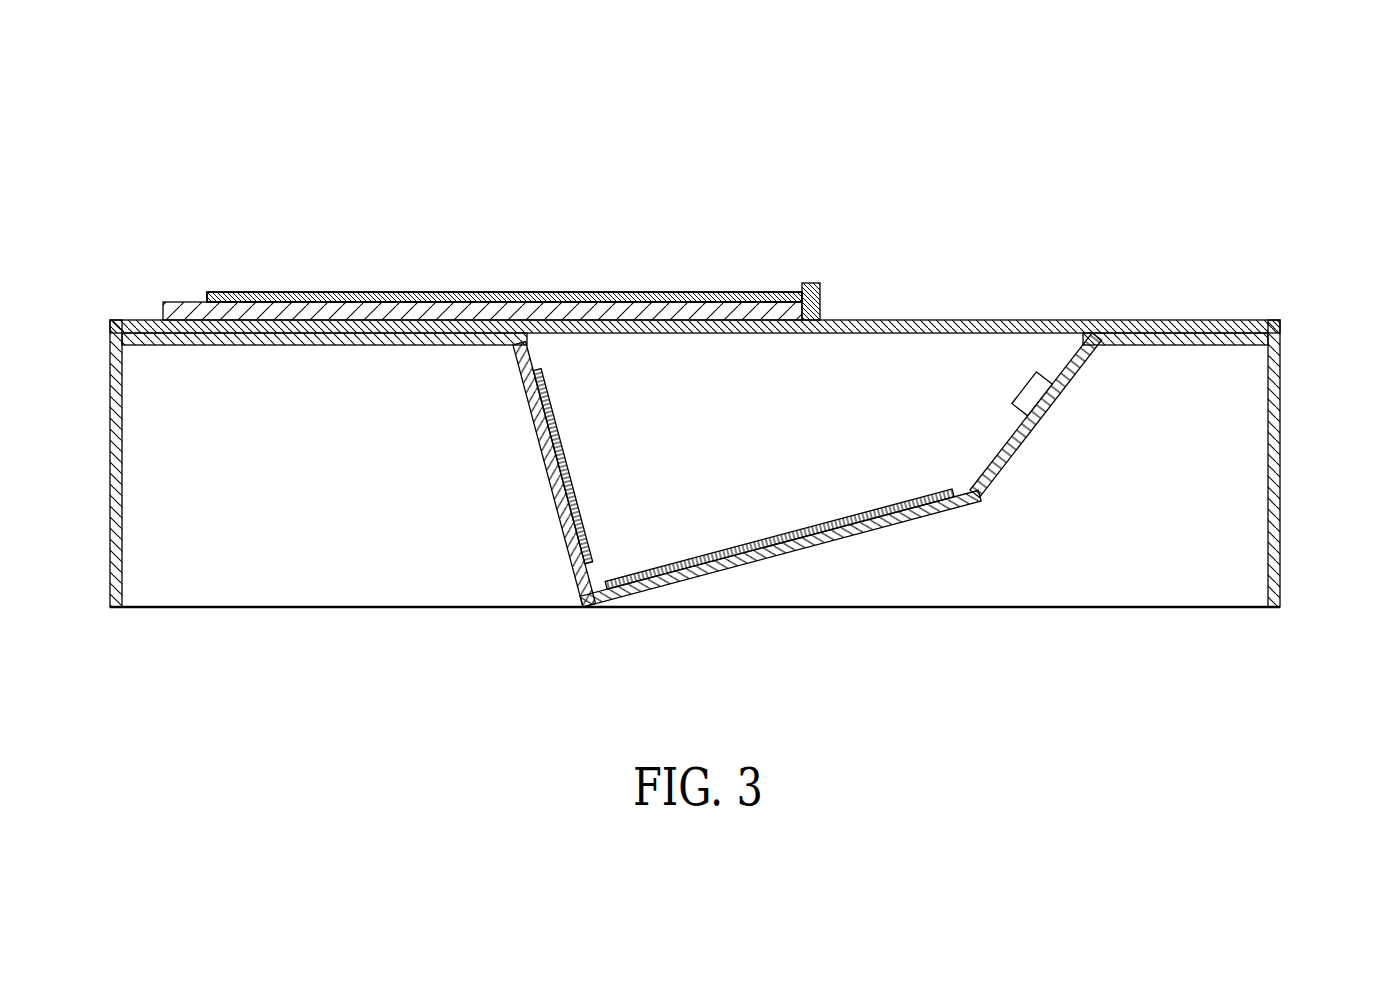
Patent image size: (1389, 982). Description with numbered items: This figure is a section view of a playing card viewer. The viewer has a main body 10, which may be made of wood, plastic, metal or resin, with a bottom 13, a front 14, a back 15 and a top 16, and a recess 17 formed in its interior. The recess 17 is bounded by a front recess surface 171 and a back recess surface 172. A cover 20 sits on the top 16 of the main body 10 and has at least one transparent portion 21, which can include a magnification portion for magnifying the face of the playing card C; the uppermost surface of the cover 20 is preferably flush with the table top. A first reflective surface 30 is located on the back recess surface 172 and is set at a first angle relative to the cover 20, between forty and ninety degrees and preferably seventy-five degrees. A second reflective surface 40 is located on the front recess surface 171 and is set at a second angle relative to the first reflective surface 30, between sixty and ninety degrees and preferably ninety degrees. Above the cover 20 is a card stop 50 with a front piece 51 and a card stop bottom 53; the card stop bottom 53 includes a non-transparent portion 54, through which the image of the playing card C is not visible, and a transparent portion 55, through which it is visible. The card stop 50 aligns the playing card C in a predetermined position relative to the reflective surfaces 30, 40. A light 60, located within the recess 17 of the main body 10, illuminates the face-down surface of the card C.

The main body 10 is at (702, 461).
The bottom 13 is at (215, 607).
The front 14 is at (1281, 507).
The back 15 is at (110, 435).
The top 16 is at (1253, 322).
The recess 17 is at (697, 418).
The front recess surface 171 is at (752, 560).
The back recess surface 172 is at (562, 466).
The cover 20 is at (1195, 318).
The transparent portion 21 is at (1047, 358).
The first reflective surface 30 is at (697, 450).
The second reflective surface 40 is at (779, 583).
The card stop 50 is at (531, 240).
The front piece 51 is at (820, 297).
The card stop bottom 53 is at (180, 302).
The non-transparent portion 54 is at (313, 293).
The transparent portion 55 is at (680, 293).
The light 60 is at (1040, 382).
The playing card C is at (600, 292).